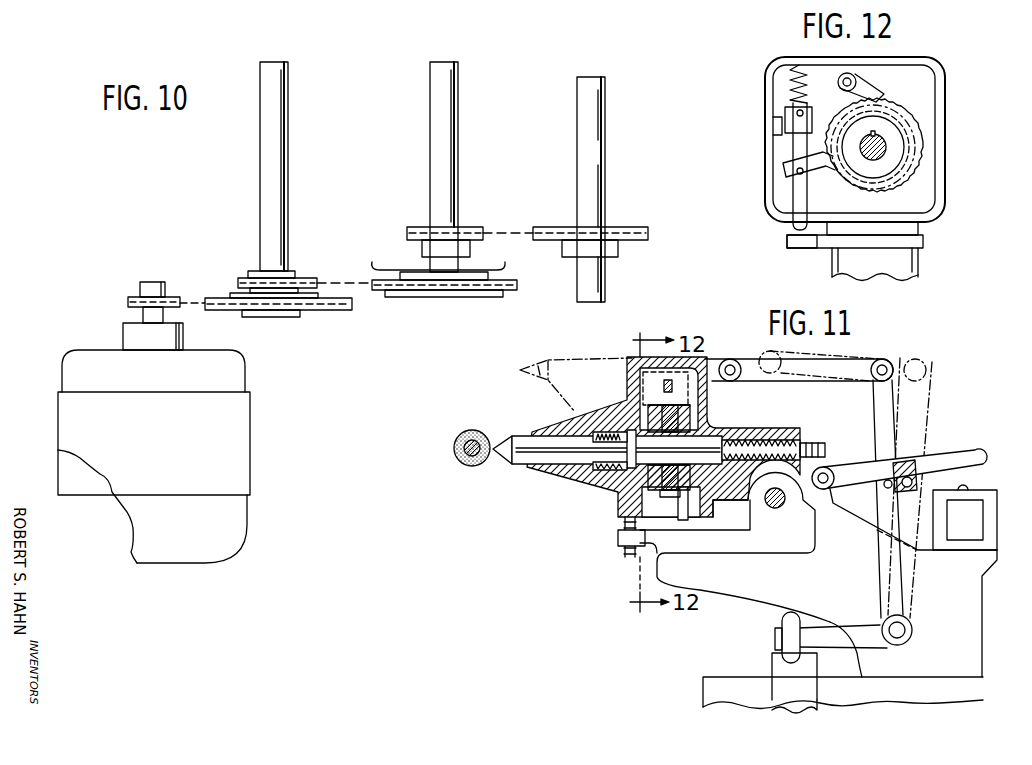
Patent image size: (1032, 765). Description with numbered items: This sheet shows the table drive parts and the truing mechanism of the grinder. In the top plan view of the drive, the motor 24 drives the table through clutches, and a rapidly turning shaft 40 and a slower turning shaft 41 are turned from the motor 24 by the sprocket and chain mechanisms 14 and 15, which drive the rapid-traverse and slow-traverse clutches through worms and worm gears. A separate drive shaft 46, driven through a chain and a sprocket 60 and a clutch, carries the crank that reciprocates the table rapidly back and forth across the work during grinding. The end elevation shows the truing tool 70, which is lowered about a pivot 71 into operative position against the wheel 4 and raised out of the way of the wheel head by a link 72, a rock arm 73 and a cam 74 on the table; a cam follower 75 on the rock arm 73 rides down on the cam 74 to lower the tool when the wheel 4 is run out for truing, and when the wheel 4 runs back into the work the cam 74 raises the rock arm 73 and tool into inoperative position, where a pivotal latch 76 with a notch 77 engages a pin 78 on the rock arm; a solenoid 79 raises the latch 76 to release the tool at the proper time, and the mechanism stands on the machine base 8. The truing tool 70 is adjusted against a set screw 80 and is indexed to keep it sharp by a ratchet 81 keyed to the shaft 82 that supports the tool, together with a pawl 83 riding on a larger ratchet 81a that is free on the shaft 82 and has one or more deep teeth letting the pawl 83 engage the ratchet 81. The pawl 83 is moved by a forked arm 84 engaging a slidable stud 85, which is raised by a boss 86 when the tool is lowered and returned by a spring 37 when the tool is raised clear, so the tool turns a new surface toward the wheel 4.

In FIG. 11, the wheel 4 is at (478, 433).
In FIG. 11, the base 8 is at (968, 697).
In FIG. 10, the sprocket and chain mechanism 14 is at (192, 302).
In FIG. 10, the sprocket and chain mechanism 15 is at (353, 282).
In FIG. 10, the motor 24 is at (240, 434).
In FIG. 12, the spring 37 is at (790, 83).
In FIG. 10, the rapidly turning shaft 40 is at (268, 172).
In FIG. 10, the slower turning shaft 41 is at (438, 160).
In FIG. 10, the drive shaft 46 is at (605, 185).
In FIG. 10, the sprocket 60 is at (618, 245).
In FIG. 11, the truing tool 70 is at (500, 440).
In FIG. 11, the pivot 71 is at (772, 510).
In FIG. 11, the link 72 is at (783, 378).
In FIG. 11, the rock arm 73 is at (875, 415).
In FIG. 11, the cam 74 is at (772, 662).
In FIG. 11, the cam follower 75 is at (782, 617).
In FIG. 11, the pivotal latch 76 is at (976, 455).
In FIG. 11, the notch 77 is at (913, 466).
In FIG. 11, the pin 78 is at (885, 487).
In FIG. 11, the solenoid 79 is at (975, 500).
In FIG. 11, the set screw 80 is at (812, 447).
In FIG. 12, the ratchet 81 is at (923, 143).
In FIG. 11, the ratchet 81 is at (643, 412).
In FIG. 12, the larger ratchet 81a is at (918, 118).
In FIG. 11, the larger ratchet 81a is at (666, 412).
In FIG. 12, the shaft 82 is at (889, 155).
In FIG. 11, the shaft 82 is at (698, 447).
In FIG. 12, the pawl 83 is at (884, 96).
In FIG. 12, the forked arm 84 is at (836, 178).
In FIG. 12, the slidable stud 85 is at (793, 195).
In FIG. 12, the boss 86 is at (787, 243).